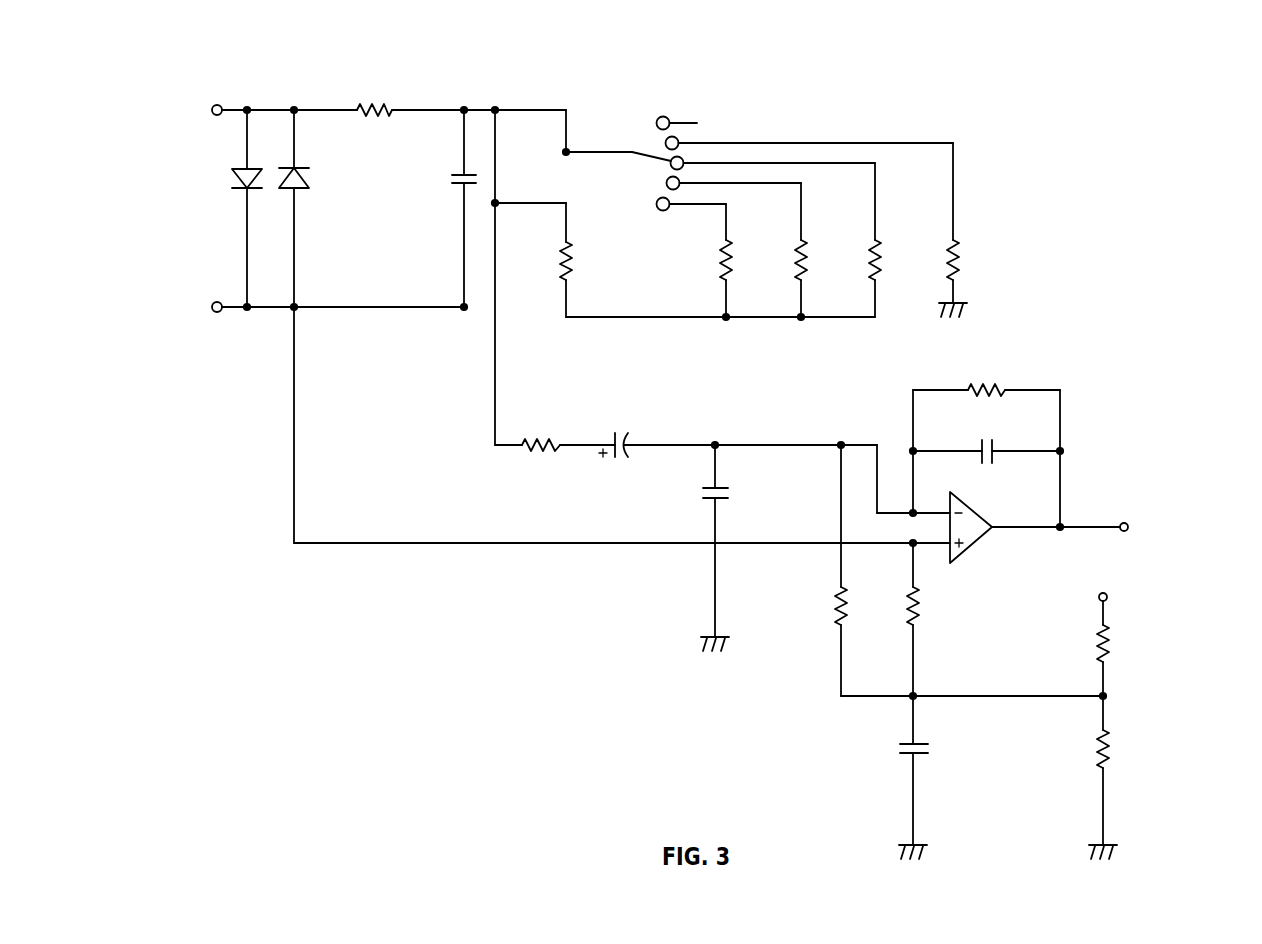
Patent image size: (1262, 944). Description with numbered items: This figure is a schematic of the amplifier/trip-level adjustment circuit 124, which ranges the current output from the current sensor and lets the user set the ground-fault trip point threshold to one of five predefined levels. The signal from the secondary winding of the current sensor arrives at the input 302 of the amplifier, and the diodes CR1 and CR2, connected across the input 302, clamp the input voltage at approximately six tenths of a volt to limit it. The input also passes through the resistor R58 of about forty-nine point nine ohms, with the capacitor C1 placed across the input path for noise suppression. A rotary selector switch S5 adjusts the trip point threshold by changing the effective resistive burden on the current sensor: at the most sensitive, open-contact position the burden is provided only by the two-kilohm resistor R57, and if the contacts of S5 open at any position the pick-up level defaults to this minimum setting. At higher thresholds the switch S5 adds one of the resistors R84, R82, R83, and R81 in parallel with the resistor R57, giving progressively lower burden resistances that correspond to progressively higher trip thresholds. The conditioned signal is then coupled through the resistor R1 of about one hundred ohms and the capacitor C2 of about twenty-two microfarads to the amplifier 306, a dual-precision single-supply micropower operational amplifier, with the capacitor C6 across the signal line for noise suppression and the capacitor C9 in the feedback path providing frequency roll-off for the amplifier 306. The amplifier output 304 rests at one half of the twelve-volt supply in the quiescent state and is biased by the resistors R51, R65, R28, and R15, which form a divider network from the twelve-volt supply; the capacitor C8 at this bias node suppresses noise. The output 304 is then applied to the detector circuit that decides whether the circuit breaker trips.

The amplifier/trip-level adjustment circuit 124 is at (1071, 80).
The input 302 is at (170, 219).
The output 304 is at (1089, 526).
The amplifier 306 is at (973, 549).
The diode CR1 is at (217, 208).
The diode CR2 is at (329, 326).
The resistor R58 is at (377, 96).
The capacitor C1 is at (428, 208).
The rotary selector switch S5 is at (594, 152).
The resistor R57 is at (555, 260).
The resistor R81 is at (701, 262).
The resistor R82 is at (744, 251).
The resistor R83 is at (806, 240).
The resistor R84 is at (844, 245).
The resistor R1 is at (527, 449).
The capacitor C2 is at (637, 460).
The capacitor C6 is at (731, 548).
The capacitor C9 is at (986, 455).
The resistor R15 is at (819, 570).
The resistor R28 is at (935, 619).
The capacitor C8 is at (935, 777).
The resistor R51 is at (1123, 648).
The resistor R65 is at (1124, 777).